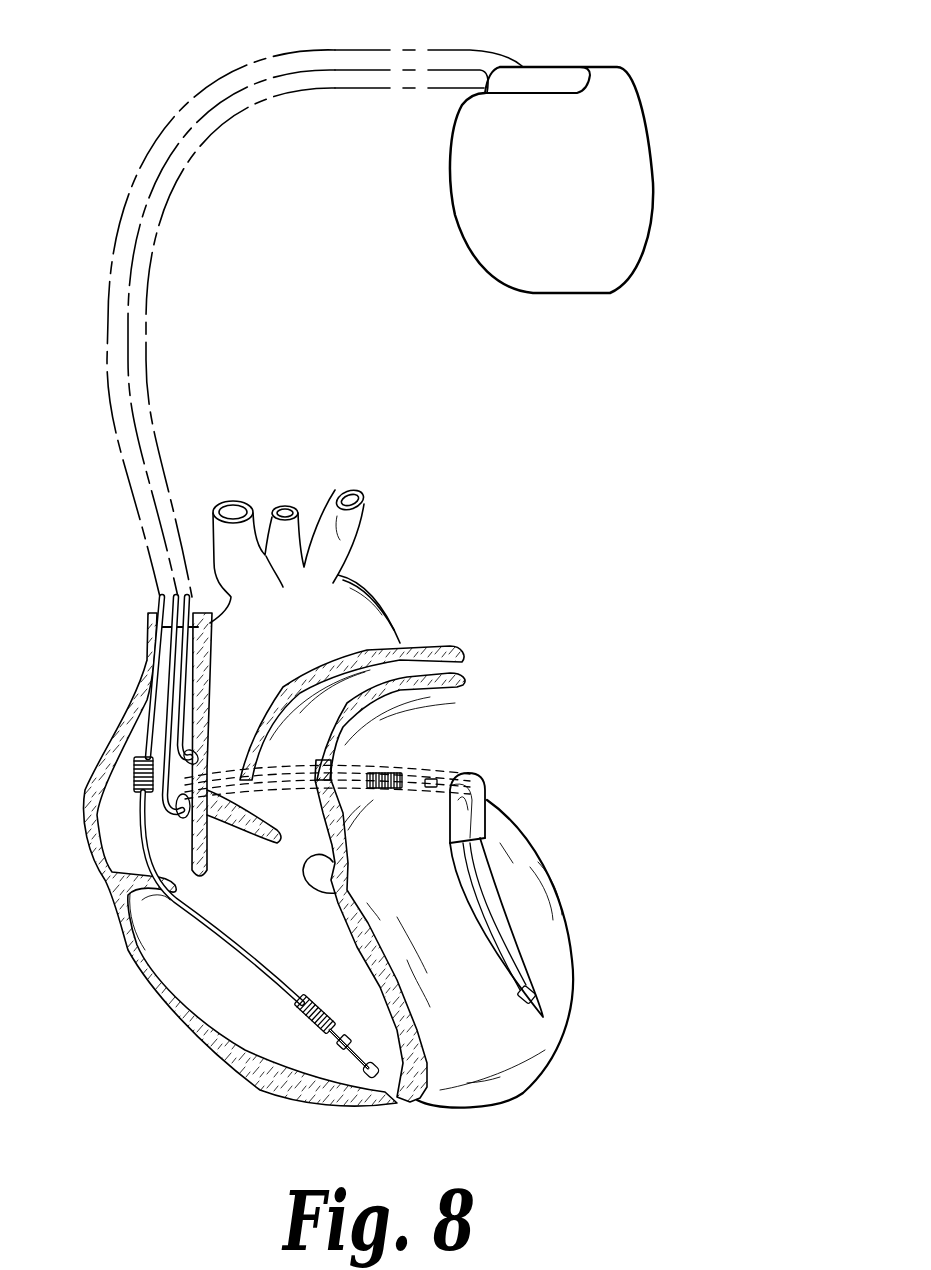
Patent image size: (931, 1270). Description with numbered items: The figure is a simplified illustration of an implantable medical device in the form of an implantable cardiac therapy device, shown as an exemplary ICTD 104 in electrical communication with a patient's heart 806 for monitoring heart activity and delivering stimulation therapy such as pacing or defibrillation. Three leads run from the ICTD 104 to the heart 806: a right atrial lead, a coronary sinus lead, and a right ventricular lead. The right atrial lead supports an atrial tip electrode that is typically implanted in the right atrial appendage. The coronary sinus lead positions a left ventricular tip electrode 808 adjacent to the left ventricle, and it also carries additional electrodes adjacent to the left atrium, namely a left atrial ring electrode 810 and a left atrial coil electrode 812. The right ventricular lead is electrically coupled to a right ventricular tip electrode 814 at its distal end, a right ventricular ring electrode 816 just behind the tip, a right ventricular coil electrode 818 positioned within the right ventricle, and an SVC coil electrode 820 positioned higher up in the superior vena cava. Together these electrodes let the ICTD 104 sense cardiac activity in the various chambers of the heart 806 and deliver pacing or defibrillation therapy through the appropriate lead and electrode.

The ICTD 104 is at (655, 165).
The heart 806 is at (198, 757).
The left ventricular tip electrode 808 is at (530, 993).
The left atrial ring electrode 810 is at (435, 778).
The left atrial coil electrode 812 is at (397, 767).
The right ventricular tip electrode 814 is at (367, 1073).
The right ventricular ring electrode 816 is at (342, 1048).
The right ventricular coil electrode 818 is at (305, 1018).
The SVC coil electrode 820 is at (137, 773).